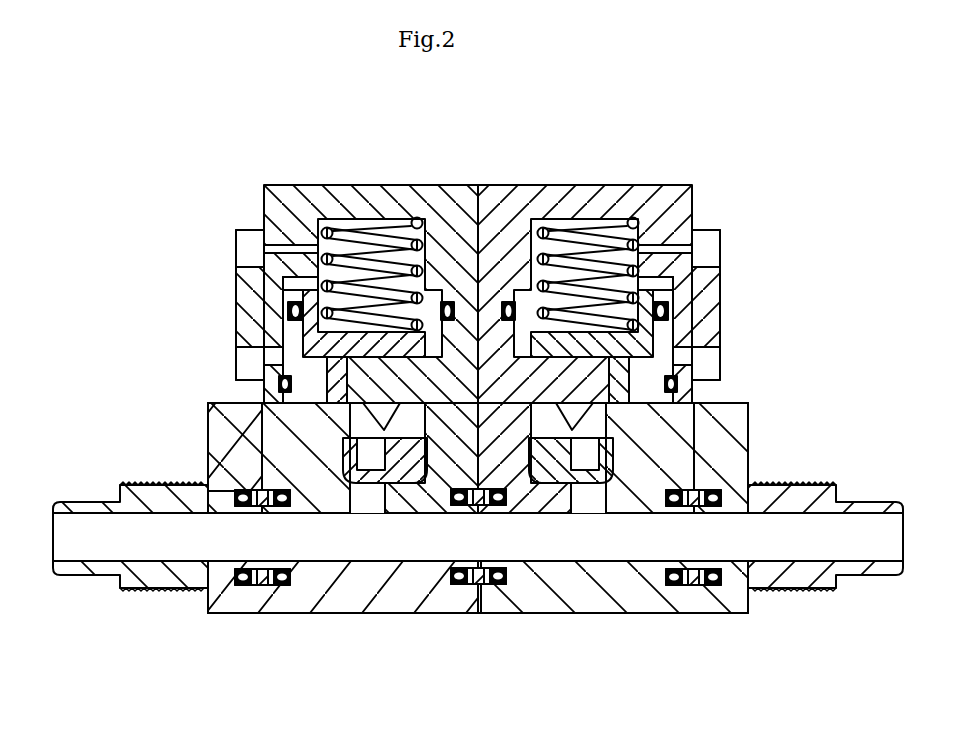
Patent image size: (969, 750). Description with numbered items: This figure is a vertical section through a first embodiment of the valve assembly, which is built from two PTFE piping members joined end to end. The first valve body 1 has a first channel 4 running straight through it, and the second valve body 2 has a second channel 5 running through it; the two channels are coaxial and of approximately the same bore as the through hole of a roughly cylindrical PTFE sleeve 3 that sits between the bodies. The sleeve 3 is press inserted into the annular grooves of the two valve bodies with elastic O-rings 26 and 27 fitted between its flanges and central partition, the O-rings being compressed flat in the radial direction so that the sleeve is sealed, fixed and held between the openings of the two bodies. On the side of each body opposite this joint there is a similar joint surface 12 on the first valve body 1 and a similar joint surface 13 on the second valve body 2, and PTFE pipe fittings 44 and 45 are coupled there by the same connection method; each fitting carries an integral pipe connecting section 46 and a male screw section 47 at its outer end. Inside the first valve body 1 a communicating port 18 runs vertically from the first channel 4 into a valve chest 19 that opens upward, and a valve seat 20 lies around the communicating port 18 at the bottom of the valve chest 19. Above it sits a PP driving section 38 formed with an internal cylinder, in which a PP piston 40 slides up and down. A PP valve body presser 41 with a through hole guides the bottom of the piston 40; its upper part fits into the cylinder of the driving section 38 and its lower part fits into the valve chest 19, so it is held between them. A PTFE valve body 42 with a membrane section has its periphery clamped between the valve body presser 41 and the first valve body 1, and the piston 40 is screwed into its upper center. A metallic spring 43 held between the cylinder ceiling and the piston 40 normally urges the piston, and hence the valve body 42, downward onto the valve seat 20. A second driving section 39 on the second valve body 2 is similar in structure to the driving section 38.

The first valve body 1 is at (420, 592).
The second valve body 2 is at (585, 590).
The sleeve 3 is at (466, 585).
The first channel 4 is at (313, 555).
The second channel 5 is at (614, 540).
The joint surface 12 is at (260, 615).
The joint surface 13 is at (694, 587).
The communicating port 18 is at (371, 503).
The valve chest 19 is at (412, 450).
The valve seat 20 is at (373, 465).
The O-ring 26 is at (463, 587).
The O-ring 27 is at (497, 587).
The driving section 38 is at (288, 193).
The driving section 39 is at (672, 207).
The piston 40 is at (300, 333).
The valve body presser 41 is at (313, 385).
The valve body 42 is at (340, 453).
The spring 43 is at (328, 230).
The pipe fitting 44 is at (200, 615).
The pipe fitting 45 is at (727, 600).
The pipe connecting section 46 is at (73, 572).
The male screw section 47 is at (142, 593).